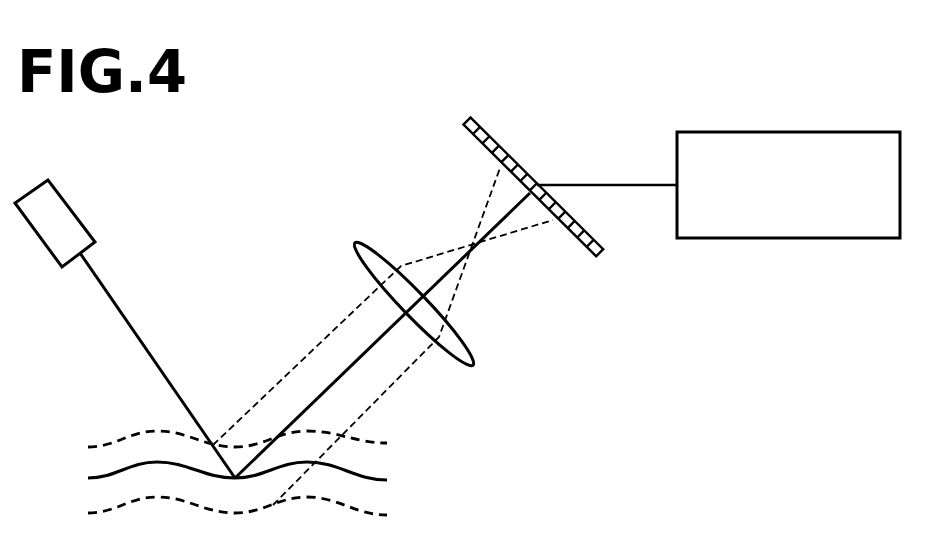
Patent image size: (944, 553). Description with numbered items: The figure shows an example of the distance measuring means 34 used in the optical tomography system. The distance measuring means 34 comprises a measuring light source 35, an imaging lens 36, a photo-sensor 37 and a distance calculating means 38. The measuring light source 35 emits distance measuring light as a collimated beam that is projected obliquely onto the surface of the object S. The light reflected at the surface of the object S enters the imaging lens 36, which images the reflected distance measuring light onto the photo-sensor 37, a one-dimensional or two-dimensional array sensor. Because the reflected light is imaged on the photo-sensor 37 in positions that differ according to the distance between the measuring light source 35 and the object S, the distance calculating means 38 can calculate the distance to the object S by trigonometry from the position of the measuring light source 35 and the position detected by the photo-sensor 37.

The distance measuring means 34 is at (264, 121).
The measuring light source 35 is at (68, 203).
The imaging lens 36 is at (467, 338).
The photo-sensor 37 is at (590, 237).
The distance calculating means 38 is at (875, 240).
The object S is at (378, 479).